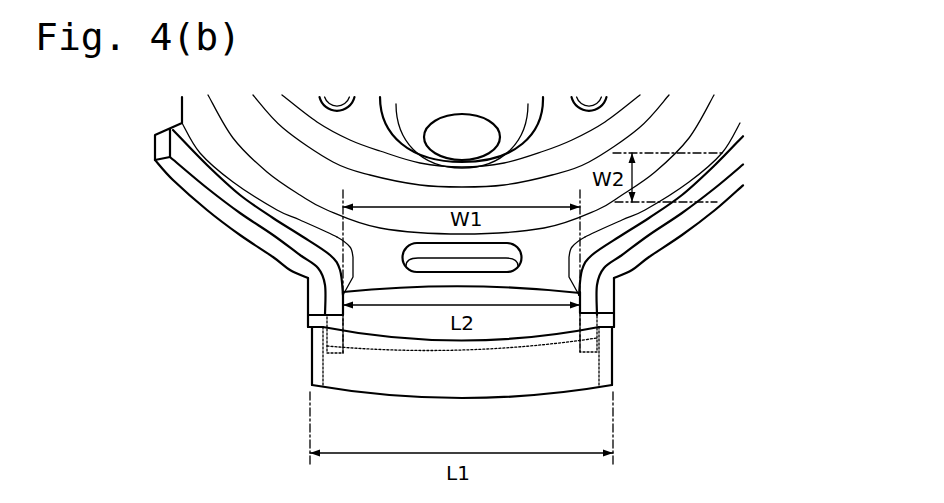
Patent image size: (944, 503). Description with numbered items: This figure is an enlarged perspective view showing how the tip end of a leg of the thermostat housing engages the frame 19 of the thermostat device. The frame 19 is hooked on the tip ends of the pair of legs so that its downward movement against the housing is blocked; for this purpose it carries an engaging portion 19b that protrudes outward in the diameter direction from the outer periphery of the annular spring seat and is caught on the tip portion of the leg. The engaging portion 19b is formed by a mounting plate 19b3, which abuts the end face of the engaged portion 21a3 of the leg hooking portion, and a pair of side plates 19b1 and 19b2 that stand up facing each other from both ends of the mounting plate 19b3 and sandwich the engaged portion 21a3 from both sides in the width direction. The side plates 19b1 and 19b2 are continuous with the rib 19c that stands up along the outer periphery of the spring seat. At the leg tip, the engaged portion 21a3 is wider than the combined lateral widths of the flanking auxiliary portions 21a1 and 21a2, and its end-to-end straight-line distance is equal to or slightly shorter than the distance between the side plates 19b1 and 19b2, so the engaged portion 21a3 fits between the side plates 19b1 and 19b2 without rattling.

The frame 19 is at (277, 162).
The engaging portion 19b is at (393, 277).
The side plate 19b1 is at (597, 338).
The side plate 19b2 is at (327, 346).
The mounting plate 19b3 is at (582, 294).
The rib 19c is at (688, 235).
The auxiliary portion 21a1 is at (610, 345).
The auxiliary portion 21a2 is at (313, 358).
The engaged portion 21a3 is at (528, 322).